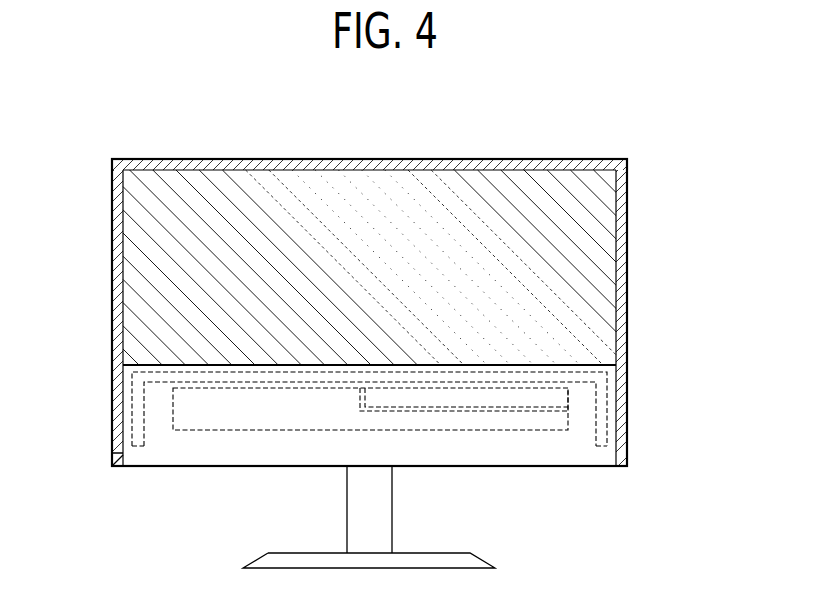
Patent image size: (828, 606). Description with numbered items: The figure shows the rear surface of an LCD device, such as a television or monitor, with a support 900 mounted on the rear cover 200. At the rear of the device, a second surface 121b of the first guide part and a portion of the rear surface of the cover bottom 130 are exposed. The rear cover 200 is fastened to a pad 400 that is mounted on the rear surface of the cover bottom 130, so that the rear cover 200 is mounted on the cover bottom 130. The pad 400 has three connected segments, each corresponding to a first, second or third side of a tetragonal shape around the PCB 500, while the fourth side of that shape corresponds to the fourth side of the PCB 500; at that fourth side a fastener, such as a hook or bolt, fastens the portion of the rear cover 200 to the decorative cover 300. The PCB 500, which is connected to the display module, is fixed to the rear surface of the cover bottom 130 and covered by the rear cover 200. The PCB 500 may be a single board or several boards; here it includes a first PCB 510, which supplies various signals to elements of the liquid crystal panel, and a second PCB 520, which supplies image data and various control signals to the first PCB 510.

The second surface of the first guide part 121b is at (491, 160).
The cover bottom 130 is at (360, 191).
The rear cover 200 is at (587, 365).
The decorative cover 300 is at (113, 460).
The pad 400 is at (607, 383).
The PCB 500 is at (371, 465).
The first PCB 510 is at (479, 432).
The second PCB 520 is at (541, 413).
The support 900 is at (368, 524).